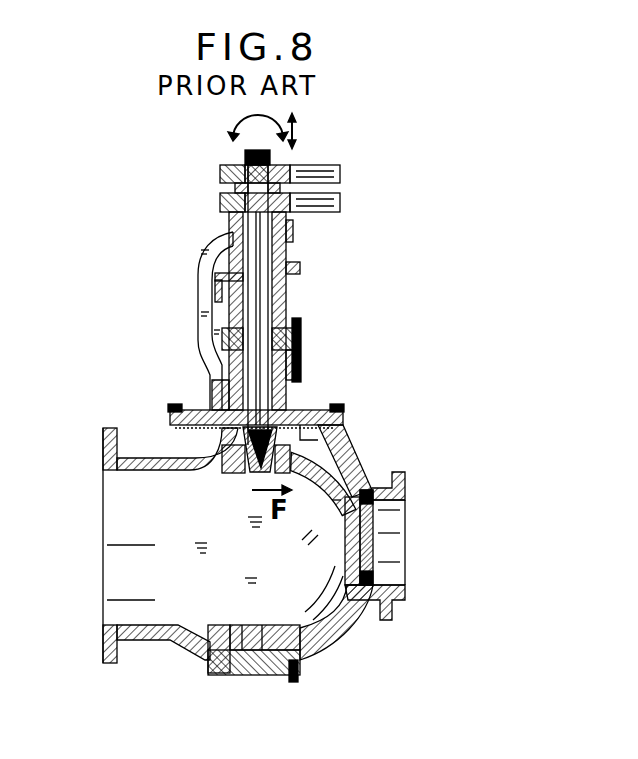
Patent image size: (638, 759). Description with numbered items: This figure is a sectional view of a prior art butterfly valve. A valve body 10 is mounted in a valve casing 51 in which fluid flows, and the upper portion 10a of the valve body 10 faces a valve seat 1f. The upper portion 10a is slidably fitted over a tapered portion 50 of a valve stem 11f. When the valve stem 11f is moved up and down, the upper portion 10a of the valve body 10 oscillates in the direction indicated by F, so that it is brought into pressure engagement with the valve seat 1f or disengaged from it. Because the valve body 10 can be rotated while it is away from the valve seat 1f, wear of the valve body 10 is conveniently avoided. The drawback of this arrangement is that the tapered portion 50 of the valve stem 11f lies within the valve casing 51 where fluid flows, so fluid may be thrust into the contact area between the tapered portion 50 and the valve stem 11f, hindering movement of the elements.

The valve stem 11f is at (262, 291).
The valve casing 51 is at (138, 452).
The upper portion of the valve body 10a is at (308, 462).
The tapered portion 50 is at (245, 475).
The valve seat 1f is at (364, 497).
The valve body 10 is at (372, 552).